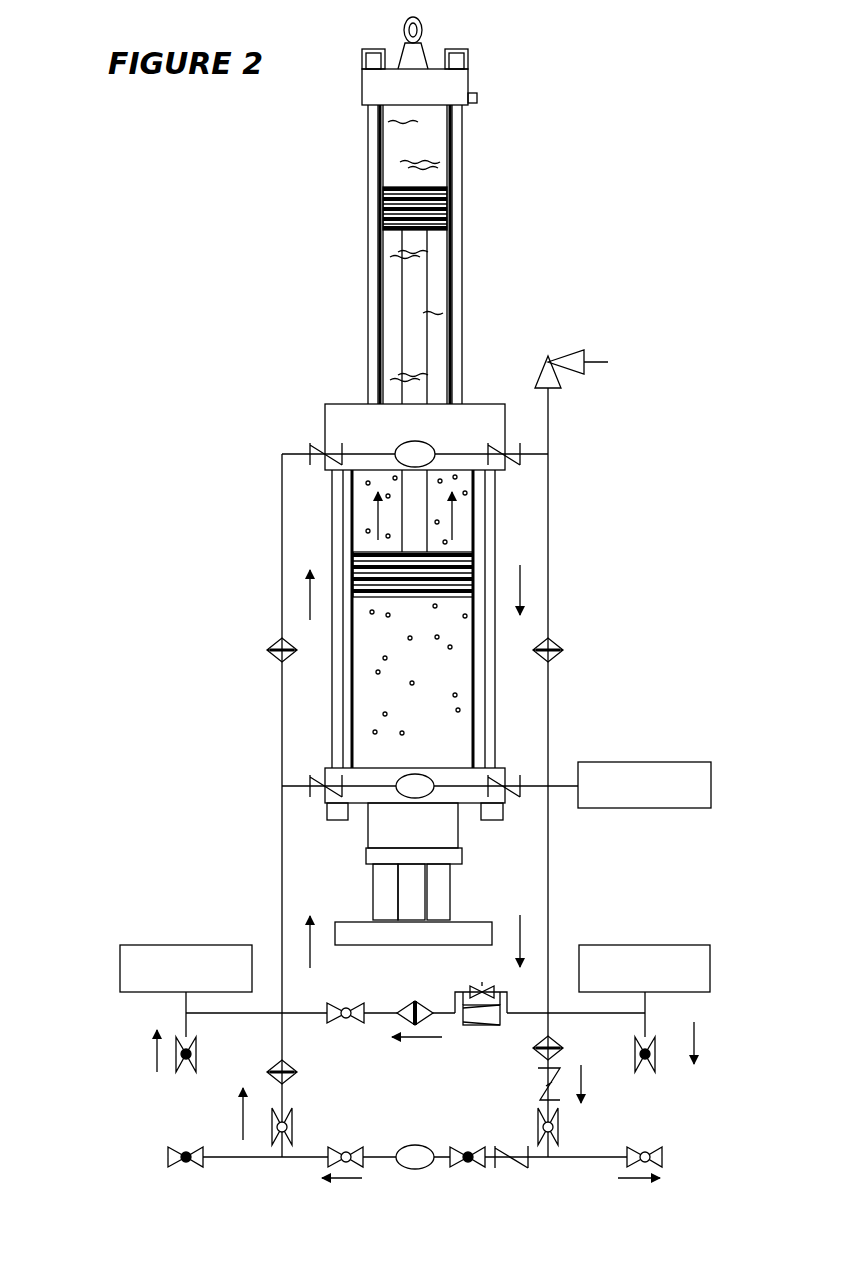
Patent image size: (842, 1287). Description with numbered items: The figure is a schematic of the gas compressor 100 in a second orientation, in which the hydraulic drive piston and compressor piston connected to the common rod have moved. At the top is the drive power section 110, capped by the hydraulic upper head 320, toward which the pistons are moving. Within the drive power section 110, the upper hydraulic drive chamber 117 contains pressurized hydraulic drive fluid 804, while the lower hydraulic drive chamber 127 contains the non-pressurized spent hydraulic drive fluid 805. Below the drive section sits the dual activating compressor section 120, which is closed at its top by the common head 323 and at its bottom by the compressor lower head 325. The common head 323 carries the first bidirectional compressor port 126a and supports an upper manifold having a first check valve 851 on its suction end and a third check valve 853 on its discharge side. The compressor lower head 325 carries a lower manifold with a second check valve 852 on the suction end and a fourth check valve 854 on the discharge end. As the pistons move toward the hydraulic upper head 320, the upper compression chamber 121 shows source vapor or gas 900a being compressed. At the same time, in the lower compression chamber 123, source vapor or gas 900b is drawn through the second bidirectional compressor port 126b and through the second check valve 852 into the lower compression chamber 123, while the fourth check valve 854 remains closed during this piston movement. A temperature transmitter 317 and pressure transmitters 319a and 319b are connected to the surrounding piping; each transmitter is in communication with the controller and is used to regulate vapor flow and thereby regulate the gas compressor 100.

The gas compressor 100 is at (163, 158).
The drive power section 110 is at (323, 224).
The upper hydraulic drive chamber 117 is at (400, 157).
The dual activating compressor section 120 is at (322, 525).
The upper compression chamber 121 is at (368, 512).
The lower compression chamber 123 is at (466, 697).
The first bidirectional compressor port 126a is at (433, 446).
The second bidirectional compressor port 126b is at (432, 790).
The lower hydraulic drive chamber 127 is at (398, 300).
The temperature transmitter 317 is at (712, 784).
The pressure transmitter 319a is at (113, 968).
The pressure transmitter 319b is at (716, 968).
The hydraulic upper head 320 is at (362, 94).
The common head 323 is at (326, 404).
The compressor lower head 325 is at (325, 768).
The pressurized hydraulic drive fluid 804 is at (430, 165).
The spent hydraulic drive fluid 805 is at (430, 316).
The first check valve 851 is at (310, 450).
The second check valve 852 is at (310, 796).
The third check valve 853 is at (522, 465).
The fourth check valve 854 is at (522, 789).
The source vapor or gas 900a is at (368, 528).
The source vapor or gas 900b is at (451, 649).